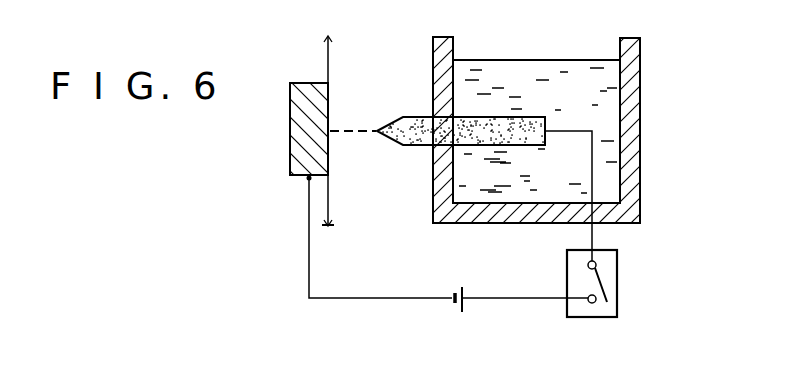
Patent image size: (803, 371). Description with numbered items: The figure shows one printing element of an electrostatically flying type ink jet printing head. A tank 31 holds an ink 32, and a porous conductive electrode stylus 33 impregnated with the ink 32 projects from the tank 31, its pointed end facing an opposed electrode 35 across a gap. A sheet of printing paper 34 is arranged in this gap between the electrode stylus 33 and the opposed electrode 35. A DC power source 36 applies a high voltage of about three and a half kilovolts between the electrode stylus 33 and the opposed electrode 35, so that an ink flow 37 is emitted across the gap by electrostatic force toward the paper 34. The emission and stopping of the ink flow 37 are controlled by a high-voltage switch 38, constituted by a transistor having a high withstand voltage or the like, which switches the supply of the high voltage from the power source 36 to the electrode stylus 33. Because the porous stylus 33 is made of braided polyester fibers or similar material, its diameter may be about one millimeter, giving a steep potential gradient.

The tank 31 is at (640, 128).
The ink 32 is at (575, 76).
The porous conductive electrode stylus 33 is at (413, 118).
The printing paper 34 is at (328, 53).
The opposed electrode 35 is at (296, 112).
The DC power source 36 is at (461, 287).
The ink flow 37 is at (357, 130).
The high-voltage switch 38 is at (617, 281).